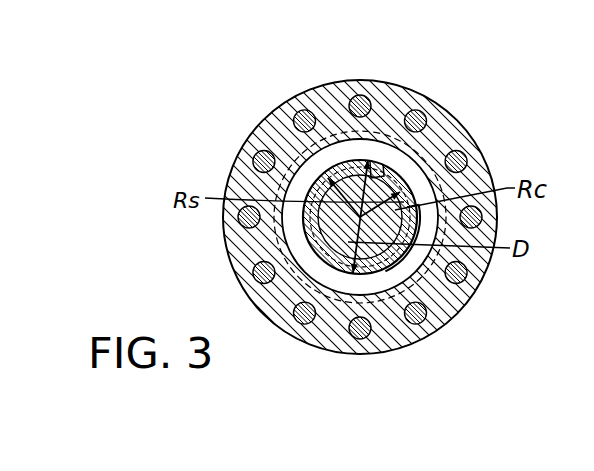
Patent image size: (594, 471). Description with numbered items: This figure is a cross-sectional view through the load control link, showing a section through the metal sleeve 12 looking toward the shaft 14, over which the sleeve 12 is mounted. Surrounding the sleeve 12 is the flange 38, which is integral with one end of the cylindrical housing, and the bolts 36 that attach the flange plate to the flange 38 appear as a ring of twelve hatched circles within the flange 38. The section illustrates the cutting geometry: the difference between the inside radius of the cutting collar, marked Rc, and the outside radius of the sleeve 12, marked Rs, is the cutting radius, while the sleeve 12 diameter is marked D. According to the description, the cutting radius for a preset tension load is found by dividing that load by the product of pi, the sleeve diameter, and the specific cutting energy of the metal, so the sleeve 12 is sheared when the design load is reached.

The metal sleeve 12 is at (332, 256).
The shaft 14 is at (328, 226).
The bolts 36 is at (362, 93).
The flange 38 is at (307, 85).